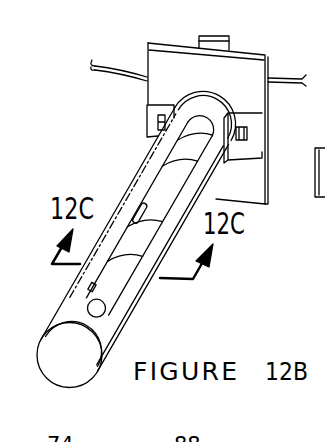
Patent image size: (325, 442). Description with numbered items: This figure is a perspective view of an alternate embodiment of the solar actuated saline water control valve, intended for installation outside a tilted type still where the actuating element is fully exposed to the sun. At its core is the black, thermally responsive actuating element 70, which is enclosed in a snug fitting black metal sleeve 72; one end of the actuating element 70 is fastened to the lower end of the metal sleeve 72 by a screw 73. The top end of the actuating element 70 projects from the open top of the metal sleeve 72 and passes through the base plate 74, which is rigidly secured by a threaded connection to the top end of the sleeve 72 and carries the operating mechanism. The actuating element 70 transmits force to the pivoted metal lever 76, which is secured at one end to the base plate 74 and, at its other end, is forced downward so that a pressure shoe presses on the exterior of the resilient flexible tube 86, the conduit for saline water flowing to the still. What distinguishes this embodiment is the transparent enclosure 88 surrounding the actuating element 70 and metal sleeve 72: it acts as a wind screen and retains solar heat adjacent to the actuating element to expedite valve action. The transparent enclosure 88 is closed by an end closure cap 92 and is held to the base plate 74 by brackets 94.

The thermally responsive actuating element 70 is at (129, 187).
The metal sleeve 72 is at (153, 162).
The screw 73 is at (89, 293).
The base plate 74 is at (173, 44).
The pivoted metal lever 76 is at (229, 37).
The resilient flexible tube 86 is at (106, 64).
The transparent enclosure 88 is at (136, 308).
The end closure cap 92 is at (88, 381).
The brackets 94 is at (147, 118).